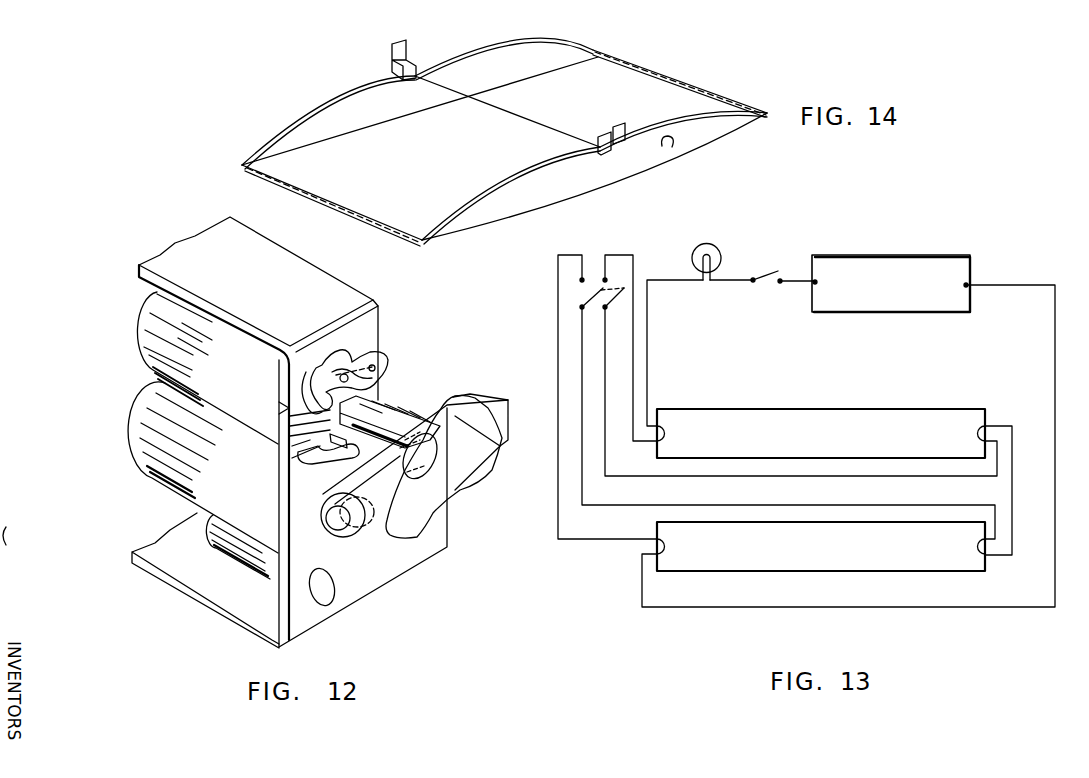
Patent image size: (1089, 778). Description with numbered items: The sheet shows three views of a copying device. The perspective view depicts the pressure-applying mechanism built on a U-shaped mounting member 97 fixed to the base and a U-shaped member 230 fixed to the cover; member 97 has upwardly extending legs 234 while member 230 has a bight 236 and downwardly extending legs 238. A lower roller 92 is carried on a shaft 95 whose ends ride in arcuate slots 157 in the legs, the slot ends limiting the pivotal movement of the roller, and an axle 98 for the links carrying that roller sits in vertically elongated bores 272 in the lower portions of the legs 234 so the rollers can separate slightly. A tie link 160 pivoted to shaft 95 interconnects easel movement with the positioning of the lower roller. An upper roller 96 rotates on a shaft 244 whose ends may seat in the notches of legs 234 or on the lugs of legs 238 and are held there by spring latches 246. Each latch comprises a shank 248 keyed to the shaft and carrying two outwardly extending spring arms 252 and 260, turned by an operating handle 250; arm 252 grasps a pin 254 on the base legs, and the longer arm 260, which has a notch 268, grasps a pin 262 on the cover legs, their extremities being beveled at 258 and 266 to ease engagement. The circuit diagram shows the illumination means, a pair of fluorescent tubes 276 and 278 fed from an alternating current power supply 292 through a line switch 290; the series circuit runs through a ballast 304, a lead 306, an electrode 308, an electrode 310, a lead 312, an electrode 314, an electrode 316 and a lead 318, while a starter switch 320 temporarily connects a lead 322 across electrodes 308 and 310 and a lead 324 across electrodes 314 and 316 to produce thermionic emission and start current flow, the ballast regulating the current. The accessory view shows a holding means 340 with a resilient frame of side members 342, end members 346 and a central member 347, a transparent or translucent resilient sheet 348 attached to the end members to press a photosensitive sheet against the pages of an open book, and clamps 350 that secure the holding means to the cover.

In FIG. 12, the U-shaped member 230 is at (268, 250).
In FIG. 12, the downwardly extending legs 238 is at (283, 374).
In FIG. 12, the bight 236 is at (257, 604).
In FIG. 12, the upwardly extending legs 234 is at (274, 562).
In FIG. 12, the upper roller 96 is at (150, 343).
In FIG. 12, the lower roller 92 is at (168, 478).
In FIG. 12, the U-shaped mounting member 97 is at (178, 590).
In FIG. 12, the shank 248 is at (282, 414).
In FIG. 12, the spring latches 246 is at (296, 432).
In FIG. 12, the pins 254 is at (292, 447).
In FIG. 12, the bevel 258 is at (300, 458).
In FIG. 12, the pins 262 is at (348, 368).
In FIG. 12, the spring arm 260 is at (330, 370).
In FIG. 12, the bevel 266 is at (376, 372).
In FIG. 12, the notch 268 is at (386, 382).
In FIG. 12, the spring arm 252 is at (354, 462).
In FIG. 12, the shaft 244 is at (446, 404).
In FIG. 12, the tie link 160 is at (500, 440).
In FIG. 12, the operating handle 250 is at (455, 472).
In FIG. 12, the shaft 95 is at (350, 528).
In FIG. 12, the arcuate slots 157 is at (362, 522).
In FIG. 12, the bores 272 is at (325, 608).
In FIG. 12, the axle 98 is at (330, 570).
In FIG. 13, the starter switch 320 is at (600, 289).
In FIG. 13, the lead 306 is at (648, 345).
In FIG. 13, the ballast 304 is at (696, 250).
In FIG. 13, the line switch 290 is at (770, 270).
In FIG. 13, the alternating current power supply 292 is at (934, 255).
In FIG. 13, the lead 318 is at (874, 610).
In FIG. 13, the lead 312 is at (1017, 448).
In FIG. 13, the lead 322 is at (700, 477).
In FIG. 13, the lead 324 is at (852, 505).
In FIG. 13, the fluorescent tube 276 is at (821, 417).
In FIG. 13, the fluorescent tube 278 is at (821, 559).
In FIG. 13, the electrode 308 is at (666, 432).
In FIG. 13, the electrode 310 is at (976, 432).
In FIG. 13, the electrode 316 is at (666, 545).
In FIG. 13, the electrode 314 is at (976, 546).
In FIG. 14, the side members 342 is at (338, 90).
In FIG. 14, the end members 346 is at (320, 188).
In FIG. 14, the central member 347 is at (503, 117).
In FIG. 14, the clamps 350 is at (400, 43).
In FIG. 14, the resilient sheet 348 is at (672, 147).
In FIG. 14, the holding means 340 is at (735, 79).